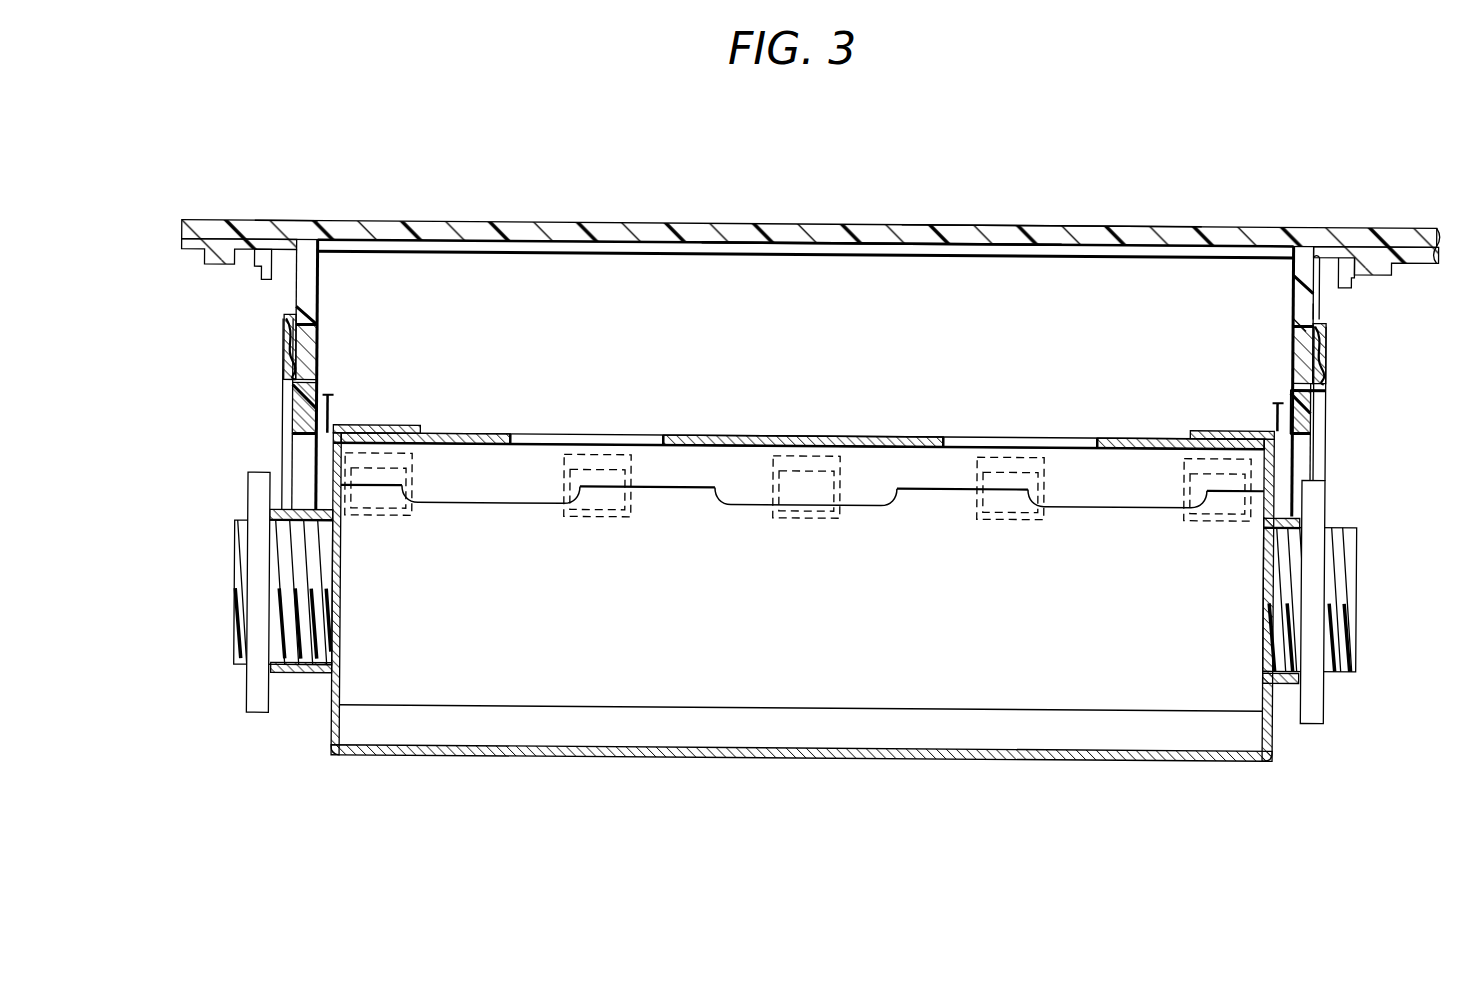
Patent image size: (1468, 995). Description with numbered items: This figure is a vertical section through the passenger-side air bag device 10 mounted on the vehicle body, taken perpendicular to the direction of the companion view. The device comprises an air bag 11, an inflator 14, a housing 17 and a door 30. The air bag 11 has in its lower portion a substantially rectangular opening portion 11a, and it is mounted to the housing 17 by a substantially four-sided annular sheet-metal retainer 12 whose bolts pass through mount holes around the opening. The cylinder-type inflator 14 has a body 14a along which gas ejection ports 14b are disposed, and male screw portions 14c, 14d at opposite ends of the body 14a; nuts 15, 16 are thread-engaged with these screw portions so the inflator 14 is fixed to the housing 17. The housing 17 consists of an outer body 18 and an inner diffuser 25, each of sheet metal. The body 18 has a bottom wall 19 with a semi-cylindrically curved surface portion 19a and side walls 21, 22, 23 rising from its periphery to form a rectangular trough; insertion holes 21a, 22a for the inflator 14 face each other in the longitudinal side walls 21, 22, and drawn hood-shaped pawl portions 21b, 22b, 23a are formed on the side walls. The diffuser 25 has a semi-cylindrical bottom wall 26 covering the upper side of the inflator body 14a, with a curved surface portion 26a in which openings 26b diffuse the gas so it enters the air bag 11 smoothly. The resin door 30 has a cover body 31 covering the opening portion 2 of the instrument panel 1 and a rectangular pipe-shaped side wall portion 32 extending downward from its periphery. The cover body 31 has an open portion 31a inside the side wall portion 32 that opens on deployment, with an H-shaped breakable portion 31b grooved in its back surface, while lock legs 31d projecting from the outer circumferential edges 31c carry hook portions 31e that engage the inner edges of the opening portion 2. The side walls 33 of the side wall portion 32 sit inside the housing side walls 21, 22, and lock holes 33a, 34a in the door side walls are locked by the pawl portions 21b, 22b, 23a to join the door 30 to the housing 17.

The instrument panel 1 is at (205, 222).
The opening portion 2 is at (840, 232).
The passenger-side air bag device 10 is at (783, 639).
The air bag 11 is at (332, 398).
The opening portion 11a is at (448, 428).
The retainer 12 is at (1205, 426).
The inflator 14 is at (800, 667).
The body 14a is at (768, 710).
The gas ejection ports 14b is at (490, 506).
The male screw portion 14c is at (1356, 577).
The male screw portion 14d is at (240, 576).
The nut 15 is at (1313, 721).
The nut 16 is at (260, 717).
The housing 17 is at (1237, 641).
The body 18 is at (1228, 760).
The bottom wall 19 is at (801, 796).
The curved surface portion 19a is at (968, 759).
The side wall 21 is at (1328, 420).
The insertion hole 21a is at (1328, 462).
The pawl portions 21b is at (1326, 378).
The side wall 22 is at (292, 398).
The insertion hole 22a is at (282, 448).
The pawl portions 22b is at (298, 378).
The side wall 23 is at (250, 335).
The pawl portions 23a is at (600, 470).
The diffuser 25 is at (897, 432).
The bottom wall 26 is at (799, 393).
The curved surface portion 26a is at (710, 436).
The openings 26b is at (527, 436).
The door 30 is at (809, 313).
The cover body 31 is at (633, 216).
The open portion 31a is at (877, 233).
The breakable portion 31b is at (1012, 232).
The outer circumferential edges 31c is at (270, 222).
The lock legs 31d is at (285, 238).
The hook portions 31e is at (268, 262).
The side wall portion 32 is at (1326, 314).
The side walls 33 is at (322, 305).
The lock holes 33a is at (308, 347).
The lock holes 34a is at (392, 518).